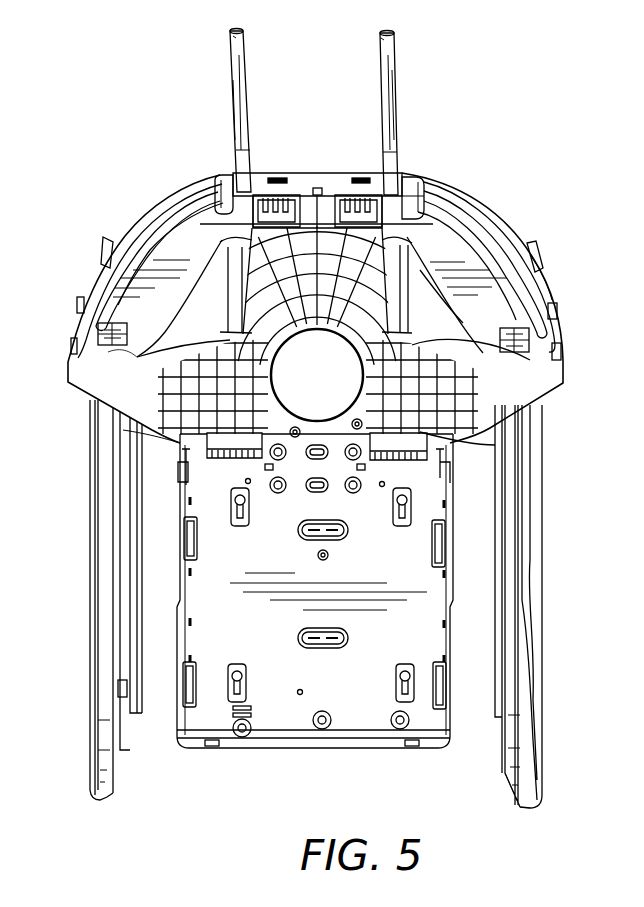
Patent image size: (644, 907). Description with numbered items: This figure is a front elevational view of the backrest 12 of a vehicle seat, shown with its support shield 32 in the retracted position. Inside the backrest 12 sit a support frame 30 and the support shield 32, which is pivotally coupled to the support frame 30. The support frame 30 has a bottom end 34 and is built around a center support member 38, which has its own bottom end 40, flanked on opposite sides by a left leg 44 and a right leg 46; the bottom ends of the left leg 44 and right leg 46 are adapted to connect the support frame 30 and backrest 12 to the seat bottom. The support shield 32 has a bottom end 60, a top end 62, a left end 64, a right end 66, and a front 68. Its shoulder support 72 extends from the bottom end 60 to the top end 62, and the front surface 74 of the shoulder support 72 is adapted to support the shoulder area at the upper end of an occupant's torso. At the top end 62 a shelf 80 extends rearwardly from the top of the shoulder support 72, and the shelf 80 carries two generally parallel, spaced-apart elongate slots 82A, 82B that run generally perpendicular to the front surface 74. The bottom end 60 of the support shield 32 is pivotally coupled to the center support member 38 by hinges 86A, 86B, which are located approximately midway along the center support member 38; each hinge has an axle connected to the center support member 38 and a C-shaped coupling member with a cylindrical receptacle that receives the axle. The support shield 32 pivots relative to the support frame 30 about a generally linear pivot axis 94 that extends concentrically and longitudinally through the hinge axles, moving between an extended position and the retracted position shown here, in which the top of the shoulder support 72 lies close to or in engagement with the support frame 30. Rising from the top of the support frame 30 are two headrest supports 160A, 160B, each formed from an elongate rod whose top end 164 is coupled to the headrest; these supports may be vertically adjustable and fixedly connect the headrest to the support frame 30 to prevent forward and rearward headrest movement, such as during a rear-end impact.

The backrest 12 is at (540, 183).
The support frame 30 is at (545, 466).
The support shield 32 is at (549, 264).
The bottom end 34 is at (537, 808).
The center support member 38 is at (342, 705).
The bottom end 40 is at (308, 752).
The left leg 44 is at (543, 660).
The right leg 46 is at (90, 655).
The bottom end 60 is at (166, 433).
The top end 62 is at (192, 185).
The left end 64 is at (562, 328).
The right end 66 is at (78, 303).
The front 68 is at (177, 240).
The shoulder support 72 is at (200, 310).
The front surface 74 is at (177, 355).
The shelf 80 is at (301, 182).
The elongate slot 82A is at (418, 182).
The elongate slot 82B is at (225, 182).
The hinge 86A is at (380, 462).
The hinge 86B is at (214, 460).
The pivot axis 94 is at (180, 498).
The headrest support 160A is at (397, 82).
The headrest support 160B is at (233, 72).
The top end 164 is at (230, 30).